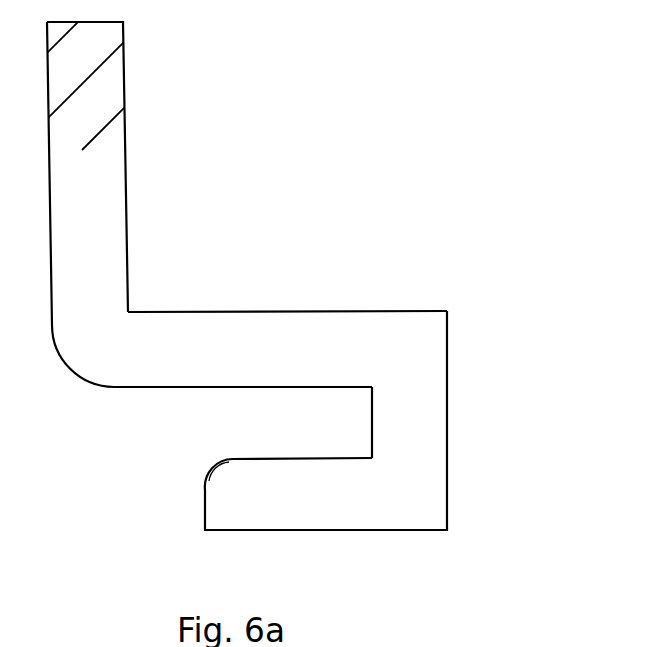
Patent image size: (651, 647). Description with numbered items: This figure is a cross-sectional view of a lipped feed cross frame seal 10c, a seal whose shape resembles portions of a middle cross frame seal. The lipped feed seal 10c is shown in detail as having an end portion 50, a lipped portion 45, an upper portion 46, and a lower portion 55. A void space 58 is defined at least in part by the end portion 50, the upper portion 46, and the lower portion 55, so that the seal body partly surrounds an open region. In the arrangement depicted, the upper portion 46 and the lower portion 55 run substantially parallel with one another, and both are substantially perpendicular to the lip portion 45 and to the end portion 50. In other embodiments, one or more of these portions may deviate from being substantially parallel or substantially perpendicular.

The lipped feed cross frame seal 10c is at (325, 296).
The lipped portion 45 is at (138, 151).
The upper portion 46 is at (267, 338).
The end portion 50 is at (417, 423).
The lower portion 55 is at (365, 497).
The void space 58 is at (226, 433).